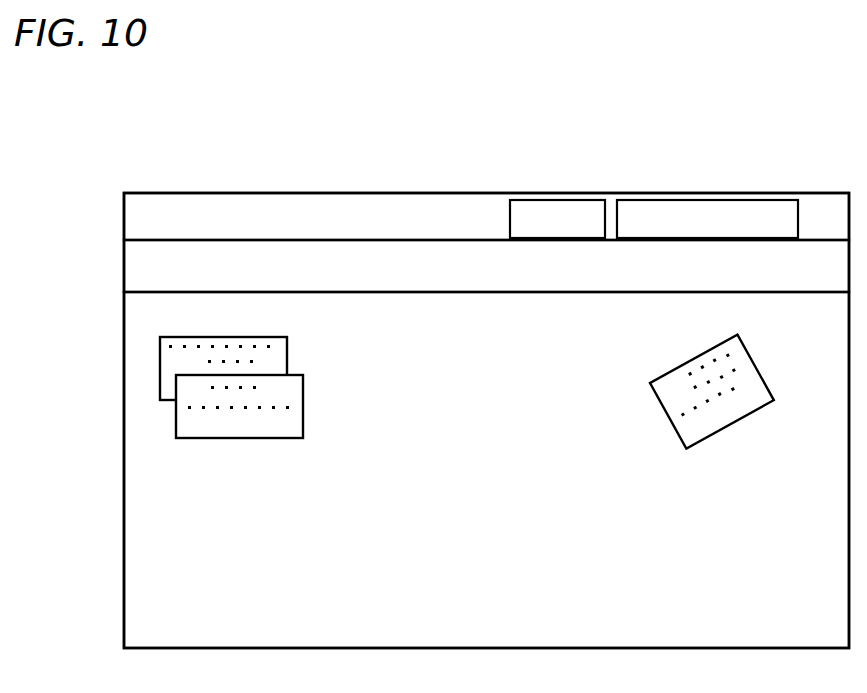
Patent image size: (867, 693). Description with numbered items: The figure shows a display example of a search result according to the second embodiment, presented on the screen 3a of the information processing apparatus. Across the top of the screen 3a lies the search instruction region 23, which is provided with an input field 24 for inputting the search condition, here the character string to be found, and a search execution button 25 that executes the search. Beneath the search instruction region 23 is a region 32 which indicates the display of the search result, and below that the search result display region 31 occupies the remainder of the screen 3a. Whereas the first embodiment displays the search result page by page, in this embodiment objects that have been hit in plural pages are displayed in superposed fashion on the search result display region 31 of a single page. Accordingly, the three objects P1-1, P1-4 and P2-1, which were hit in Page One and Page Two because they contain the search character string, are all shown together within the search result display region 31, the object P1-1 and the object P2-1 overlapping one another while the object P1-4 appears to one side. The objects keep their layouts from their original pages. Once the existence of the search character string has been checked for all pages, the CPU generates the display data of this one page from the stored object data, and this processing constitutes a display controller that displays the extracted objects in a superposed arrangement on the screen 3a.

The screen 3a is at (330, 193).
The search instruction region 23 is at (125, 217).
The input field 24 is at (787, 200).
The search execution button 25 is at (561, 200).
The region which indicates the display of the search result 32 is at (125, 268).
The search result display region 31 is at (125, 428).
The object P1-1 is at (287, 358).
The object P2-1 is at (303, 405).
The object P1-4 is at (672, 425).